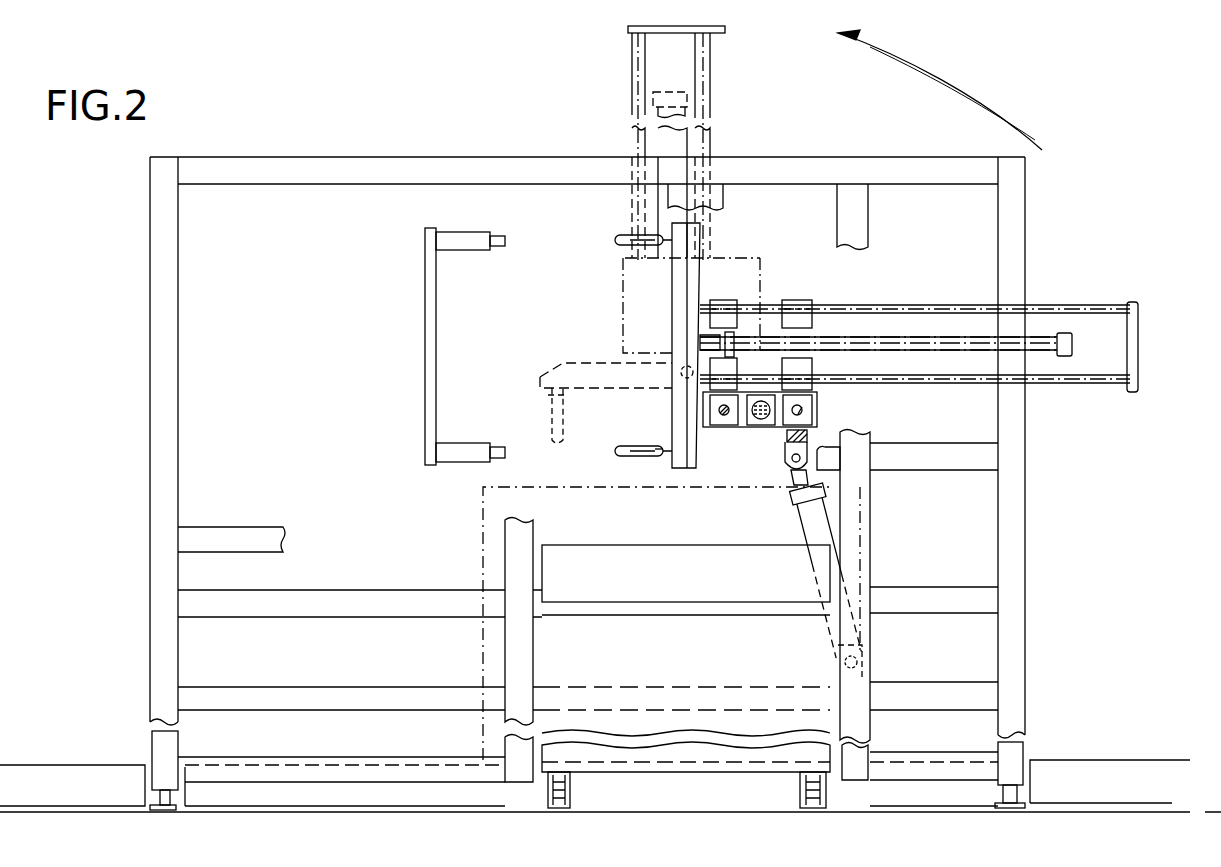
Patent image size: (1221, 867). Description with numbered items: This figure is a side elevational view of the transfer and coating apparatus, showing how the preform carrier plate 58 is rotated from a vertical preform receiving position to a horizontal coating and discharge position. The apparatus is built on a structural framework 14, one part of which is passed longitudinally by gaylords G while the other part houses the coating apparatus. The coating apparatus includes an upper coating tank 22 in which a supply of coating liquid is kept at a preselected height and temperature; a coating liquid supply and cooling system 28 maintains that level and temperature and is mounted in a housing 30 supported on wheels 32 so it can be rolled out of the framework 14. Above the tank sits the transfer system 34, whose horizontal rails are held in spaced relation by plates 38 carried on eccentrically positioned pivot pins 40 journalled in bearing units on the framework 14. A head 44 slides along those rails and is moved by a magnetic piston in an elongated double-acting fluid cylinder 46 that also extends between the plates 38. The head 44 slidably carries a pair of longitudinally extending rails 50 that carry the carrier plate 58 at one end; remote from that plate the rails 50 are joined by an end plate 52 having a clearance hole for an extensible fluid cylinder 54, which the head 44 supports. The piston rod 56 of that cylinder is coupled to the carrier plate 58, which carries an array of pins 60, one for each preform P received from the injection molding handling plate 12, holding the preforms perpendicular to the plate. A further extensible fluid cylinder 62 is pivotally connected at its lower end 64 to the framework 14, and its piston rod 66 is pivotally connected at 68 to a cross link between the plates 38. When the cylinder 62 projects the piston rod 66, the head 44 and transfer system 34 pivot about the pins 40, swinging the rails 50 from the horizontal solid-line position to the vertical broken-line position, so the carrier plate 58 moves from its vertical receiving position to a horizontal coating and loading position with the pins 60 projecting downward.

The preform handling plate 12 is at (425, 372).
The structural framework 14 is at (1025, 553).
The coating tank 22 is at (655, 547).
The coating liquid supply and cooling system 28 is at (685, 740).
The housing 30 is at (770, 752).
The wheels 32 is at (565, 785).
The transfer system 34 is at (817, 403).
The plates 38 is at (868, 460).
The pivot pins 40 is at (682, 370).
The head 44 is at (623, 292).
The fluid cylinder 46 is at (770, 417).
The rails 50 is at (632, 72).
The end plate 52 is at (722, 35).
The extensible fluid cylinder 54 is at (690, 140).
The piston rod 56 is at (727, 335).
The preform carrier plate 58 is at (598, 365).
The pins 60 is at (553, 420).
The extensible fluid cylinder 62 is at (798, 522).
The lower end 64 is at (828, 660).
The piston rod 66 is at (793, 478).
The pivotal connection 68 is at (790, 437).
The gaylords G is at (485, 657).
The preforms P is at (648, 460).